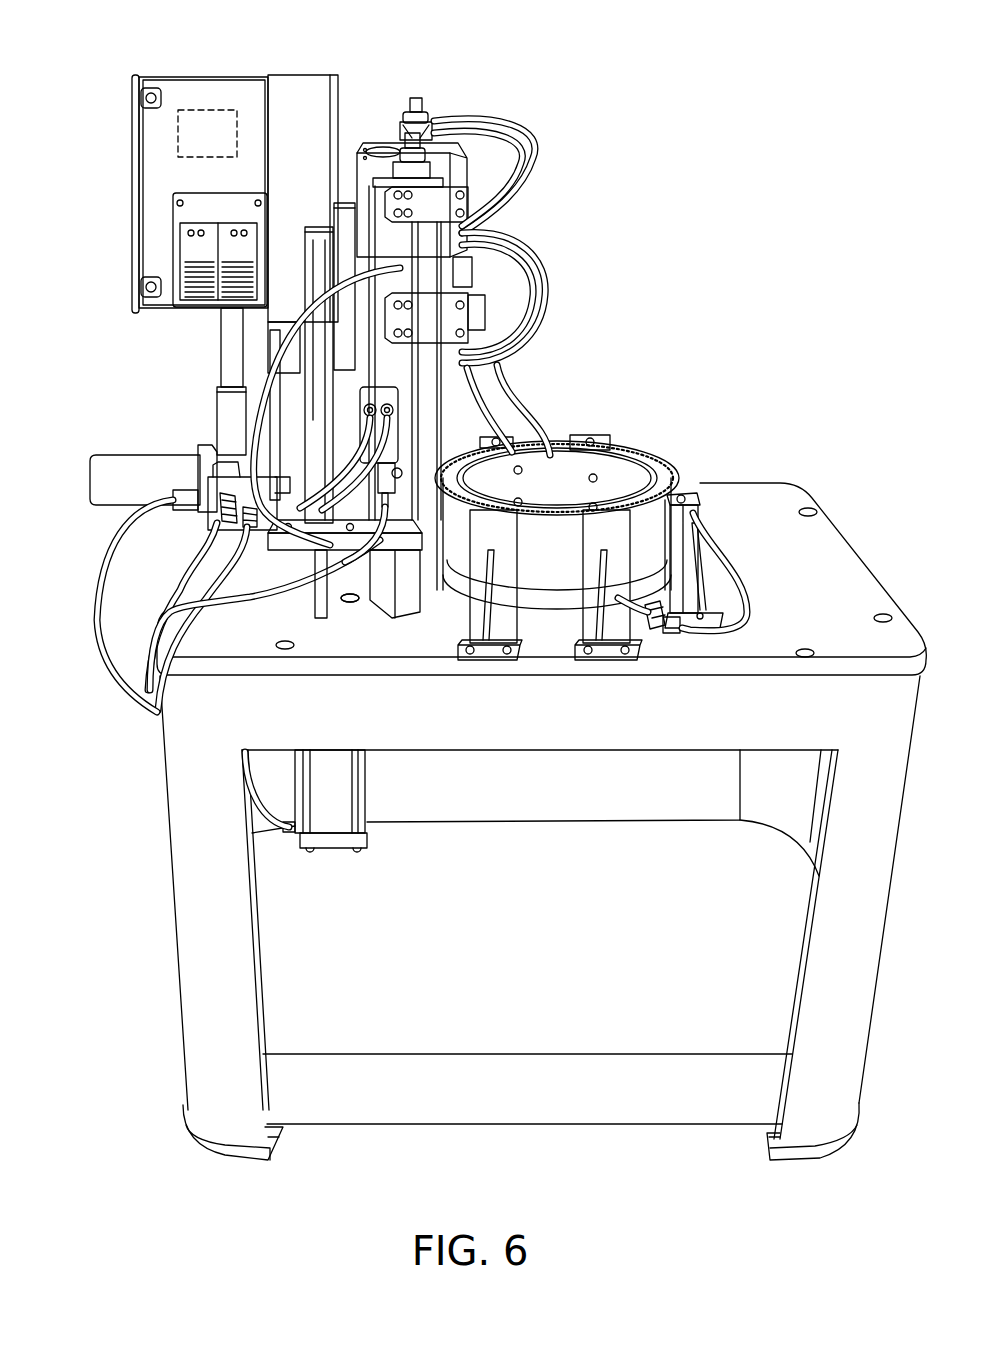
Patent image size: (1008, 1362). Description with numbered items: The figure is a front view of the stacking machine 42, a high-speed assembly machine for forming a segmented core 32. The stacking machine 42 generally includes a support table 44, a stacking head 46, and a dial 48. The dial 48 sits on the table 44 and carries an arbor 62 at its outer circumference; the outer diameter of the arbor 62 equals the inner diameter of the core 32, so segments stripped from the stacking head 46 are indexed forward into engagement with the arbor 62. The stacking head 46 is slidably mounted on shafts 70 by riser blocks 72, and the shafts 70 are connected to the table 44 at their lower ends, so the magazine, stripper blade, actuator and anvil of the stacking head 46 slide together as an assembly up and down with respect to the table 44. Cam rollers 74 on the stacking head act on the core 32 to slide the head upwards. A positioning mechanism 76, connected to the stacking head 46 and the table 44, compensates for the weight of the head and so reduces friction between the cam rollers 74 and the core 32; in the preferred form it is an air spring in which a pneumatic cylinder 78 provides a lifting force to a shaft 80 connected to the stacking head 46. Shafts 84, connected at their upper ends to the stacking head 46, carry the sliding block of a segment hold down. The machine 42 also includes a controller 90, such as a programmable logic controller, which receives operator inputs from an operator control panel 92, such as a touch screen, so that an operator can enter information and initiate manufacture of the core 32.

The core 32 is at (653, 548).
The stacking machine 42 is at (617, 243).
The support table 44 is at (852, 590).
The stacking head 46 is at (324, 413).
The dial 48 is at (628, 488).
The arbor 62 is at (557, 517).
The shafts 70 is at (317, 225).
The riser blocks 72 is at (315, 378).
The cam rollers 74 is at (467, 478).
The positioning mechanism 76 is at (300, 787).
The pneumatic cylinder 78 is at (338, 843).
The shaft 80 is at (338, 585).
The shafts 84 is at (418, 128).
The controller 90 is at (207, 133).
The operator control panel 92 is at (137, 132).